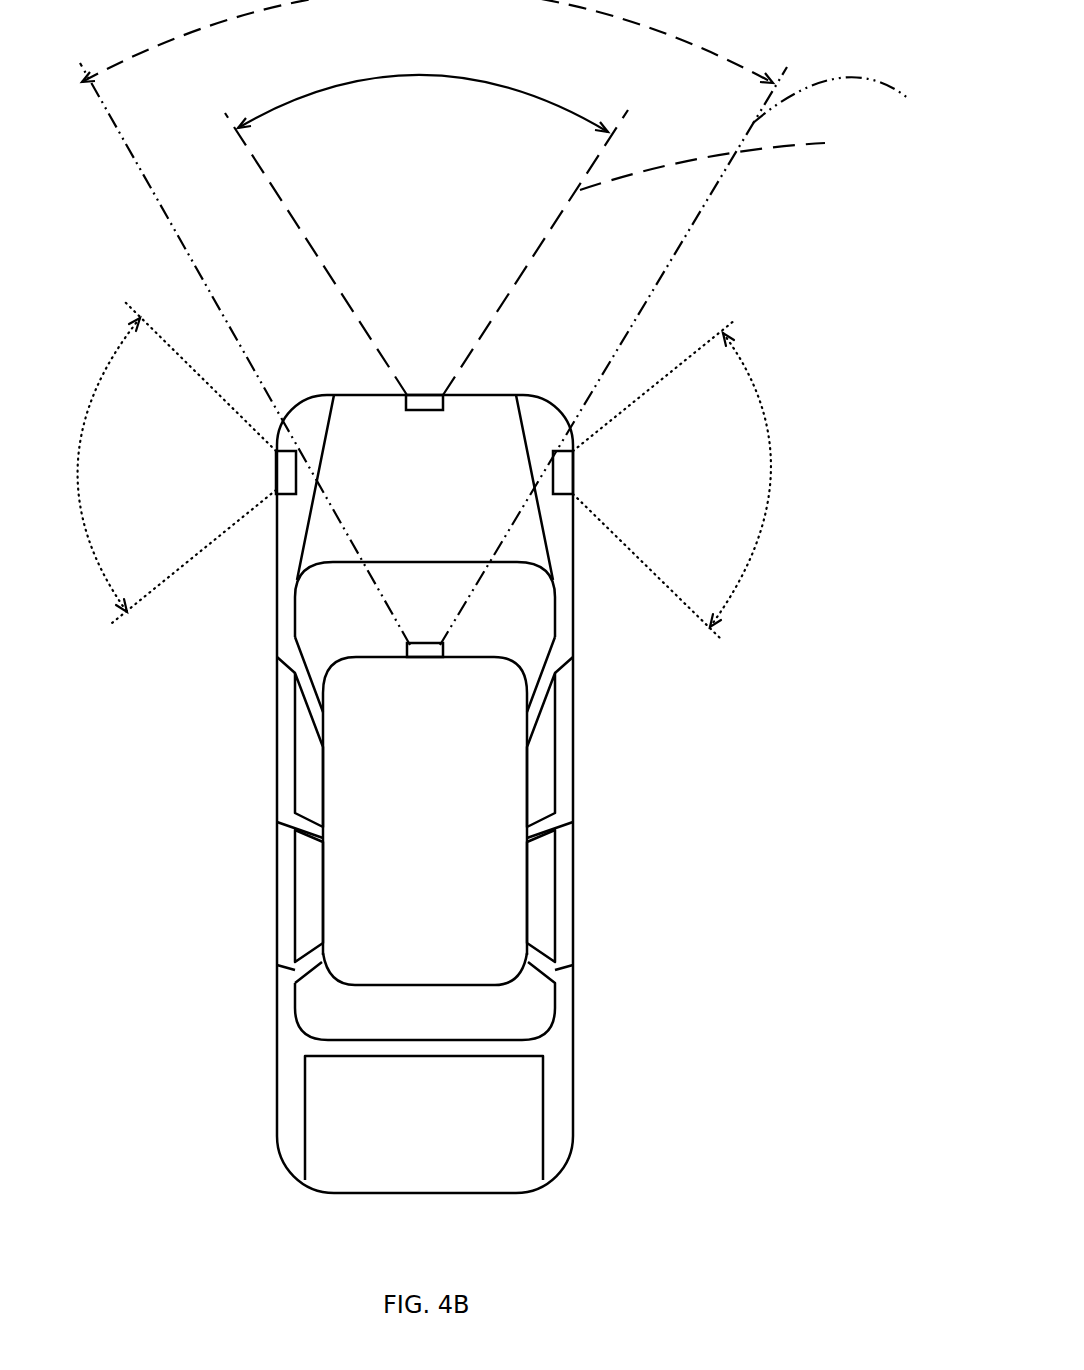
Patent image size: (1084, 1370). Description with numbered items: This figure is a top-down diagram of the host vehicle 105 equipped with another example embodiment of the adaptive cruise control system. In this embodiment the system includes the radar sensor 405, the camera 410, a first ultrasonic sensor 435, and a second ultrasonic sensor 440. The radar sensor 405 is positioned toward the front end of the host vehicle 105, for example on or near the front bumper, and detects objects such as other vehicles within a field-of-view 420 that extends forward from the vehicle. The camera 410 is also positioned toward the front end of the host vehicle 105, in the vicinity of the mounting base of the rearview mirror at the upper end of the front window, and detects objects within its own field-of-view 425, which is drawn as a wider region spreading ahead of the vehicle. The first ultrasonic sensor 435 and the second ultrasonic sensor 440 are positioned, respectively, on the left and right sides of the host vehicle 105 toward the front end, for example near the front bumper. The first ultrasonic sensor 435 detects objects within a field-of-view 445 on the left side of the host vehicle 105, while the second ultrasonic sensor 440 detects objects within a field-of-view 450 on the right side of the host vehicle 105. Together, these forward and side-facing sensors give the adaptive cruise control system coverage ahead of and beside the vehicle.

The host vehicle 105 is at (425, 1190).
The radar sensor 405 is at (423, 403).
The camera 410 is at (423, 648).
The field-of-view 420 is at (843, 152).
The field-of-view 425 is at (912, 110).
The first ultrasonic sensor 435 is at (290, 485).
The second ultrasonic sensor 440 is at (563, 480).
The field-of-view 445 is at (180, 570).
The field-of-view 450 is at (675, 600).